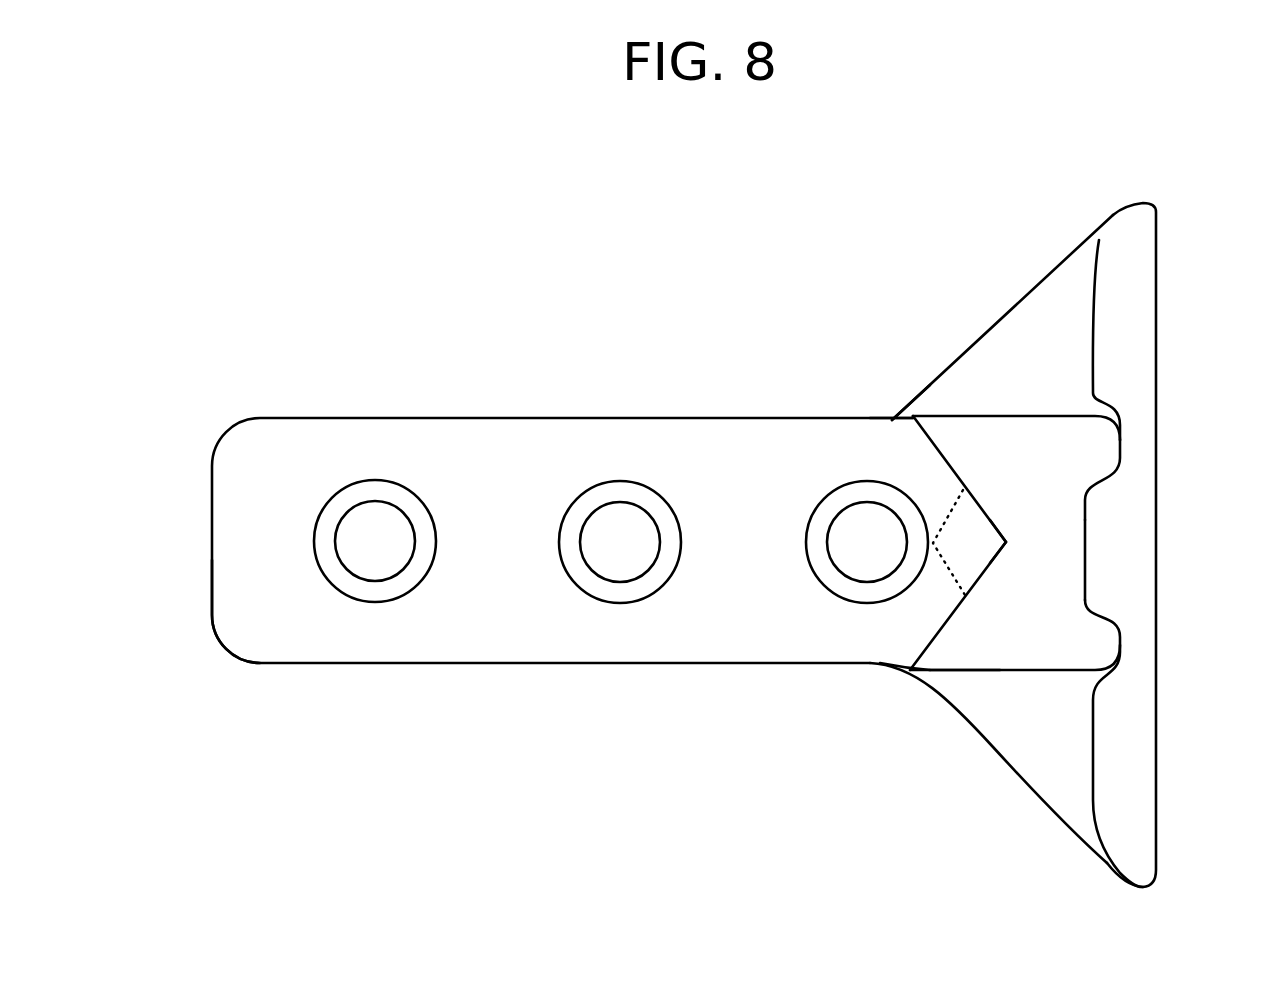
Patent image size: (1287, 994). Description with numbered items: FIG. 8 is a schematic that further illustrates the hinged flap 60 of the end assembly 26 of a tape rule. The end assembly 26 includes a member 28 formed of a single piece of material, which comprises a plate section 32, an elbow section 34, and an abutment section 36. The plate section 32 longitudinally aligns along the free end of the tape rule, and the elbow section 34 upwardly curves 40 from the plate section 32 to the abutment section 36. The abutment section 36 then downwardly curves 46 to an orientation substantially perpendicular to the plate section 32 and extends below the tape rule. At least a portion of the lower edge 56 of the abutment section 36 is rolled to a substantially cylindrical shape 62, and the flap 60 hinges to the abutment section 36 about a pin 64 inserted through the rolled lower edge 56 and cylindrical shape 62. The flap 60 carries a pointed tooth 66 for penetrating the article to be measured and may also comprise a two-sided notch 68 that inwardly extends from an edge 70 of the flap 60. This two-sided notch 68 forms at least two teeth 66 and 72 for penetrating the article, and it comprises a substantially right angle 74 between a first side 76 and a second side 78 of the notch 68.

The end assembly 26 is at (286, 289).
The member 28 is at (250, 662).
The plate section 32 is at (270, 417).
The elbow section 34 is at (988, 336).
The abutment section 36 is at (1157, 362).
The upward curve 40 is at (928, 388).
The downward curve 46 is at (1157, 230).
The lower edge 56 is at (1133, 485).
The hinged flap 60 is at (1017, 672).
The substantially cylindrical shape 62 is at (1110, 658).
The pin 64 is at (1098, 518).
The pointed tooth 66 is at (910, 670).
The two-sided notch 68 is at (890, 607).
The edge 70 is at (935, 672).
The tooth 72 is at (890, 421).
The substantially right angle 74 is at (980, 540).
The first side 76 is at (960, 603).
The second side 78 is at (958, 473).